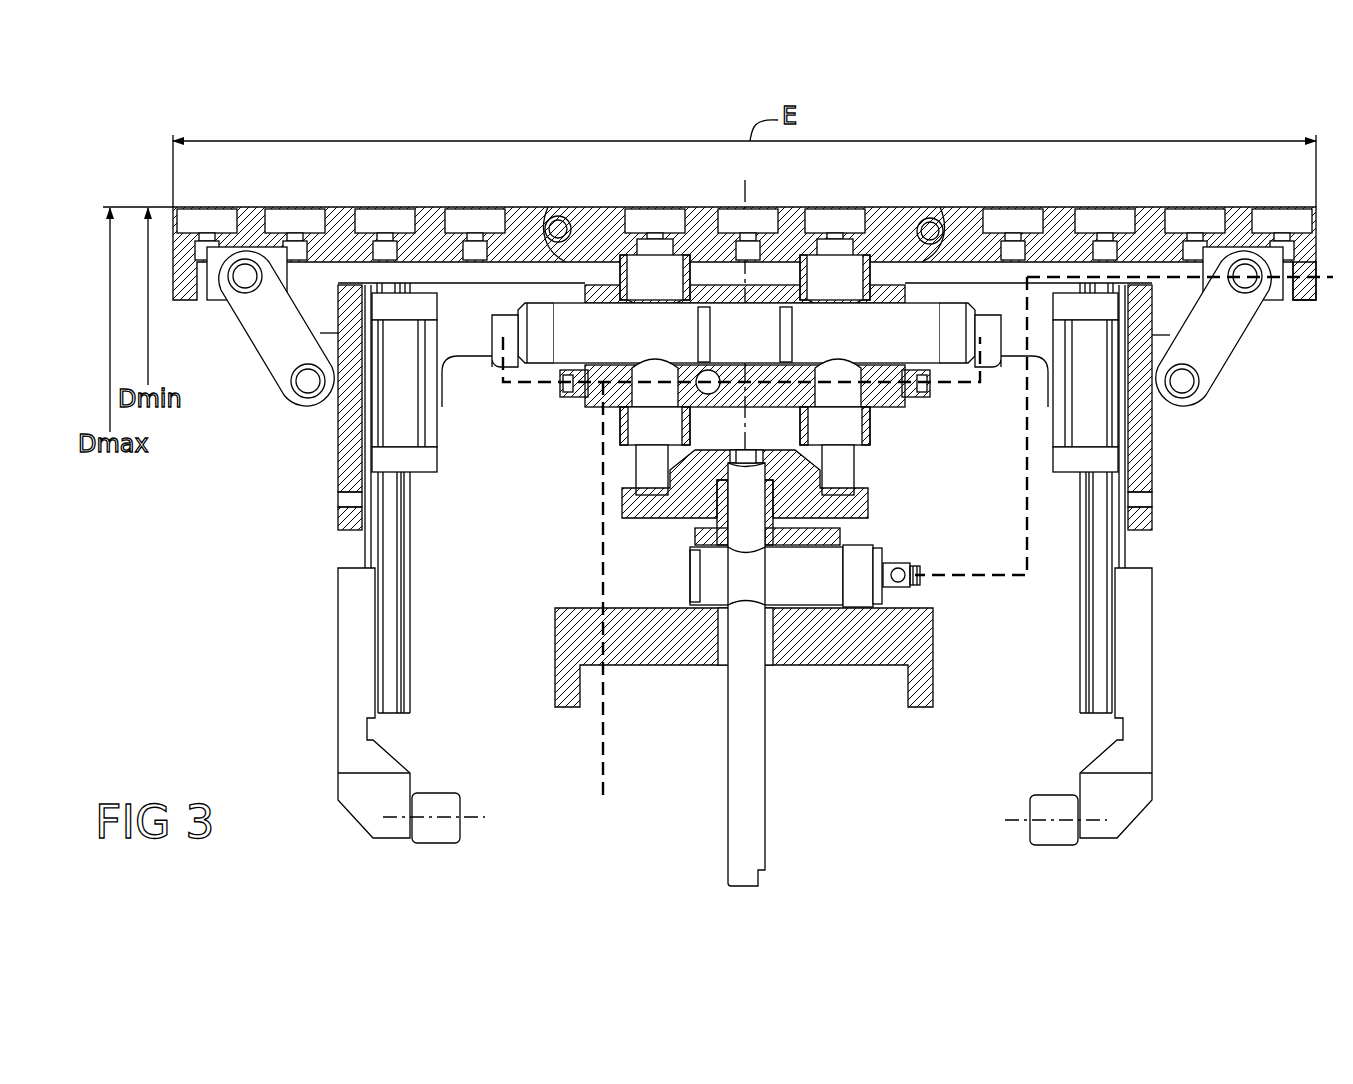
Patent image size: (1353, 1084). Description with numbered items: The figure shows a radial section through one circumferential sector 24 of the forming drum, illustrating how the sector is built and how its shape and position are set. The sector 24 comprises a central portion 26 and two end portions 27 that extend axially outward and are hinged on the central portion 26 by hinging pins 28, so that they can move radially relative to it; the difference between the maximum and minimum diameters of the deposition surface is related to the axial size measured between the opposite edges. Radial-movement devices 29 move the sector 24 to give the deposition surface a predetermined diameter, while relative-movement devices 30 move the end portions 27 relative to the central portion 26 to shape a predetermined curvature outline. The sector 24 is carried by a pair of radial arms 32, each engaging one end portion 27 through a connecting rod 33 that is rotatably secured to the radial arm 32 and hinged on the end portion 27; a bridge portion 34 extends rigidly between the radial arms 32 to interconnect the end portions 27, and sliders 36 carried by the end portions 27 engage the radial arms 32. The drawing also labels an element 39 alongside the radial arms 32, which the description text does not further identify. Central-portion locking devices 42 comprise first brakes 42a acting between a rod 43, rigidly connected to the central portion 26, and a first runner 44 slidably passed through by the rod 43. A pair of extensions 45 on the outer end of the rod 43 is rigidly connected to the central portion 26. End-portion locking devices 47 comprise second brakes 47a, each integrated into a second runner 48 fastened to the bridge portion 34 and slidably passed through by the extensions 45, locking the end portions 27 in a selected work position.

The sector 24 is at (1308, 306).
The central portion 26 is at (613, 213).
The end portion 27 is at (430, 213).
The hinging pin 28 is at (562, 215).
The radial-movement devices 29 is at (578, 597).
The relative-movement devices 30 is at (475, 382).
The radial arm 32 is at (390, 663).
The connecting rod 33 is at (275, 340).
The bridge portion 34 is at (1016, 338).
The slider 36 is at (447, 828).
The actuating cylinder 39 is at (398, 432).
The central-portion locking devices 42 is at (923, 600).
The first brake 42a is at (783, 585).
The rod 43 is at (735, 718).
The first runner 44 is at (852, 650).
The extension 45 is at (647, 465).
The end-portion locking devices 47 is at (545, 453).
The second brake 47a is at (603, 322).
The second runner 48 is at (690, 257).